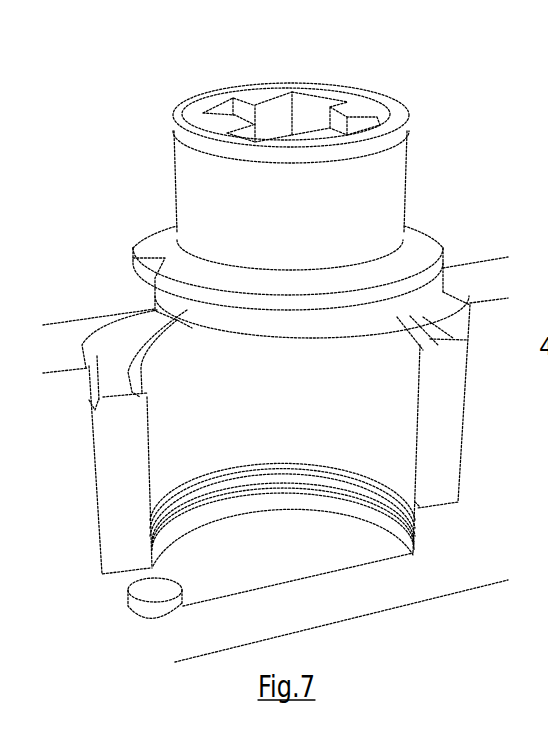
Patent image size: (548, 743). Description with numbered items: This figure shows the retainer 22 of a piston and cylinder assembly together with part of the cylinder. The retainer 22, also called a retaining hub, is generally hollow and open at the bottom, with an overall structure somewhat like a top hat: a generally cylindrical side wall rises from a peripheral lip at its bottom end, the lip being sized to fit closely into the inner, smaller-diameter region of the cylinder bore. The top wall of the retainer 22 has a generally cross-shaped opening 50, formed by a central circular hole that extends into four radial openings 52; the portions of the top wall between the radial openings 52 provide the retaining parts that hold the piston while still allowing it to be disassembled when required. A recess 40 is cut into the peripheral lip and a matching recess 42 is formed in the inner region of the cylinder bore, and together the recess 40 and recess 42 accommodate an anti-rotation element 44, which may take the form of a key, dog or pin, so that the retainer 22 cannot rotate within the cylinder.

The retainer 22 is at (398, 120).
The cross-shaped opening 50 is at (309, 70).
The radial openings 52 is at (227, 107).
The recess 40 is at (152, 272).
The recess 42 is at (132, 612).
The anti-rotation element 44 is at (155, 618).